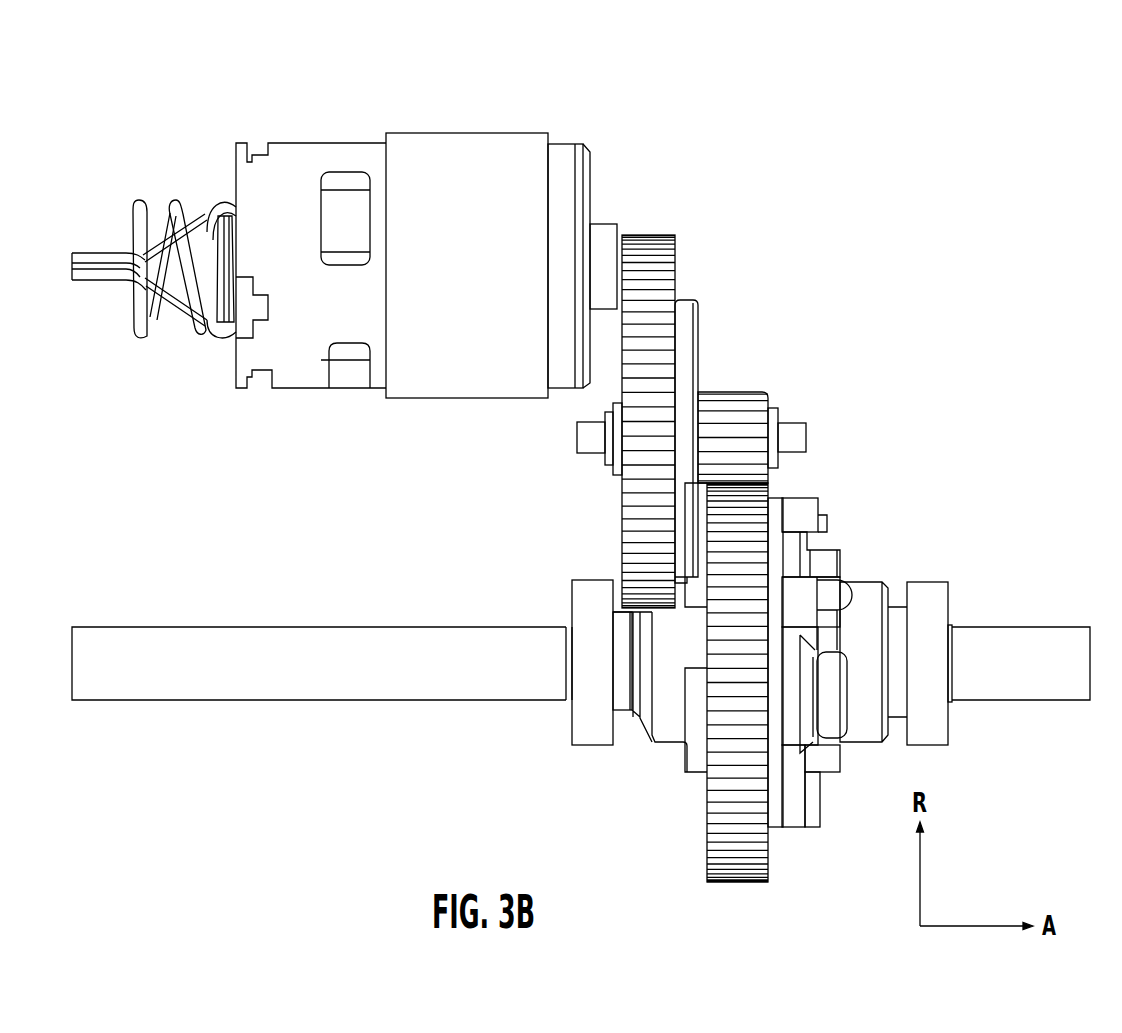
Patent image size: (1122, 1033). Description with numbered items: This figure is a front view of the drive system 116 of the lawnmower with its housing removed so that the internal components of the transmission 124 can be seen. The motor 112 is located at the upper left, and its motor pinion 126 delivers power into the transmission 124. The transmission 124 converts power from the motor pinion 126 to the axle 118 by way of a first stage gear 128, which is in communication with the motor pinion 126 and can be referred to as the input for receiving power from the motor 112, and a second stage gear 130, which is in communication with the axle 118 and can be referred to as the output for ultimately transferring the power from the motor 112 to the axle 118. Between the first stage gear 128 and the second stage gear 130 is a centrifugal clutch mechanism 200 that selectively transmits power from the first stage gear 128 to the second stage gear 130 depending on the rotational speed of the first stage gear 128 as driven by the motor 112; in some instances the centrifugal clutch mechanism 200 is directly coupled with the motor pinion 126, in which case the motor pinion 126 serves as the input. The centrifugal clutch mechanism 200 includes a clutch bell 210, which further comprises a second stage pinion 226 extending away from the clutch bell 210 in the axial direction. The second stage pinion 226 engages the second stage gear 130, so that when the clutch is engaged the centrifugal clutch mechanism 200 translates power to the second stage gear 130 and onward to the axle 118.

The motor 112 is at (365, 147).
The drive system 116 is at (965, 92).
The axle 118 is at (1020, 638).
The transmission 124 is at (927, 426).
The motor pinion 126 is at (657, 232).
The first stage gear 128 is at (635, 372).
The second stage gear 130 is at (700, 866).
The centrifugal clutch mechanism 200 is at (729, 246).
The clutch bell 210 is at (710, 344).
The second stage pinion 226 is at (745, 400).